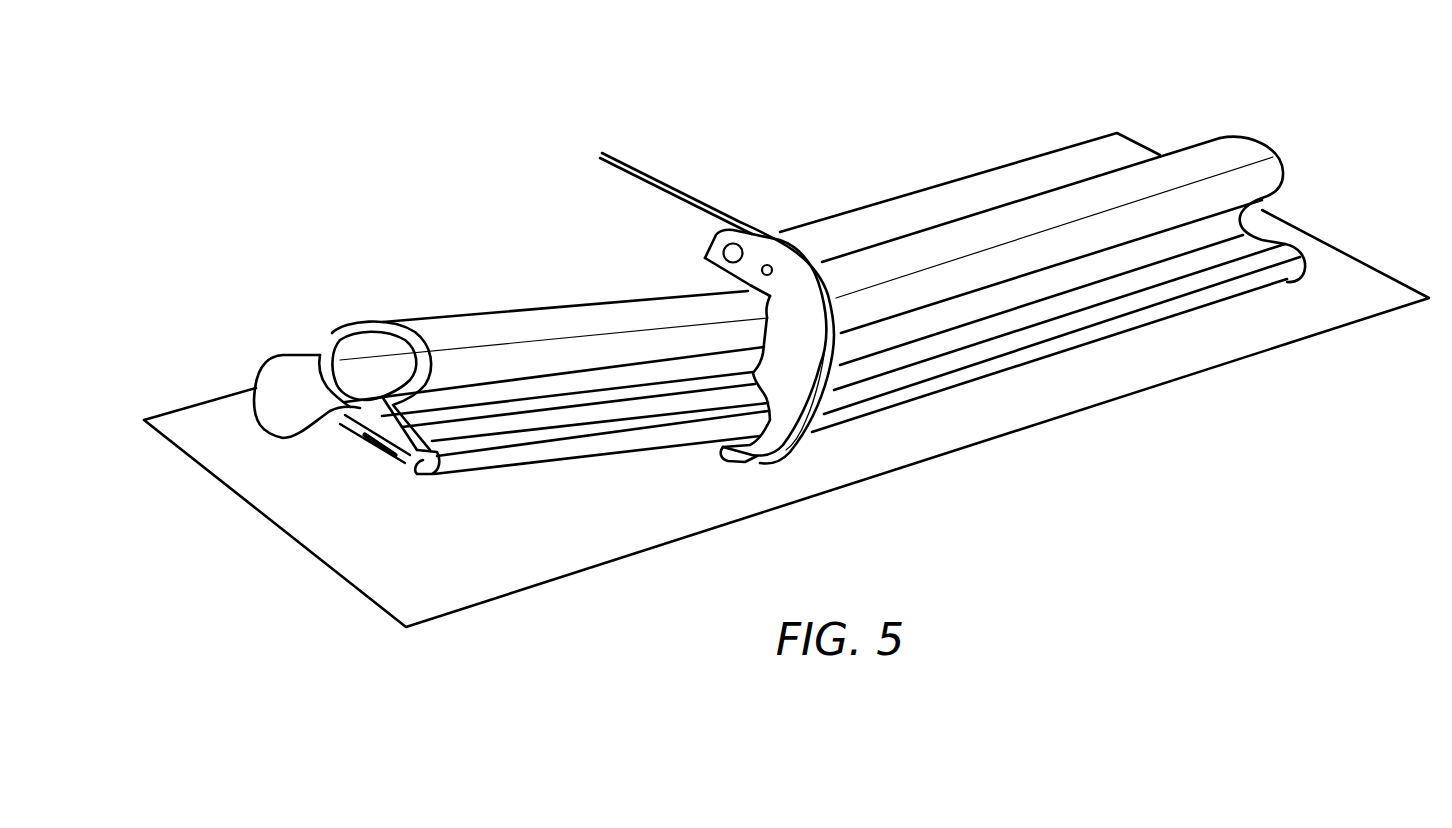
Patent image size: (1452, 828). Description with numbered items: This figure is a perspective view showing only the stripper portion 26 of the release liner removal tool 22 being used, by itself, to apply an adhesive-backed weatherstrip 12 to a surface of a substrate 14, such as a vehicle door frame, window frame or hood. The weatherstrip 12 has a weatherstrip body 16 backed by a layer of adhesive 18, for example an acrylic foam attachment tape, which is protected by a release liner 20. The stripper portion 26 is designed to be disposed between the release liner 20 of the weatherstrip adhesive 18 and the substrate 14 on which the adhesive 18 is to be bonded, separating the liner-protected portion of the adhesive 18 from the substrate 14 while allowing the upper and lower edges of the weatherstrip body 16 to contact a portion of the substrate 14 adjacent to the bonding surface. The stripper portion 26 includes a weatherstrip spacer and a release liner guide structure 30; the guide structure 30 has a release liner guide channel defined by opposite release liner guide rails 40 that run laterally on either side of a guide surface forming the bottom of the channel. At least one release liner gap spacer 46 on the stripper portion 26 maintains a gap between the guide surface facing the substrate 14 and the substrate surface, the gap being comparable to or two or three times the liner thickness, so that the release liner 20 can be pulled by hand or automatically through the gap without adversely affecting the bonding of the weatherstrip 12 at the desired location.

The adhesive-backed weatherstrip 12 is at (321, 310).
The substrate 14 is at (457, 561).
The weatherstrip body 16 is at (1233, 153).
The layer of adhesive 18 is at (355, 410).
The release liner 20 is at (680, 189).
The release liner removal tool 22 is at (598, 212).
The stripper portion 26 is at (762, 294).
The release liner guide structure 30 is at (850, 306).
The release liner guide rails 40 is at (795, 417).
The release liner gap spacer 46 is at (731, 460).